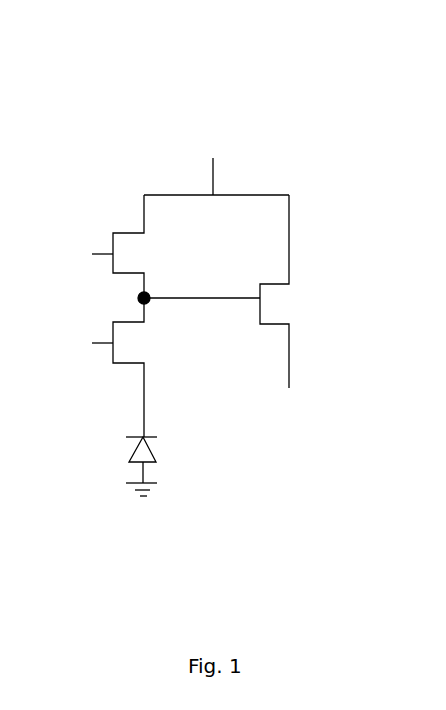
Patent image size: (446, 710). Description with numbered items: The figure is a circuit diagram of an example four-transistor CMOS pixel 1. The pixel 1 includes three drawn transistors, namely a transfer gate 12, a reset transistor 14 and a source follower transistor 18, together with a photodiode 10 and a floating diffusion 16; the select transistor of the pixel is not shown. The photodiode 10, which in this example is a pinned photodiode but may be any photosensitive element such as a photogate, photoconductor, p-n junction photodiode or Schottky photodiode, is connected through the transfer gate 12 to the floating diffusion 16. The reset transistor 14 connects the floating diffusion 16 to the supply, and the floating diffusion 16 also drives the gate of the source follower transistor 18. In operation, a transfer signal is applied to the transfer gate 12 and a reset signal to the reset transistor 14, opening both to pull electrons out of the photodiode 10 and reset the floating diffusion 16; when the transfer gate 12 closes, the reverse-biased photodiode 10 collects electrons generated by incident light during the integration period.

The pixel circuit 1 is at (281, 141).
The photodiode 10 is at (133, 452).
The transfer gate 12 is at (113, 350).
The reset transistor 14 is at (113, 262).
The floating diffusion 16 is at (150, 292).
The source follower transistor 18 is at (275, 323).